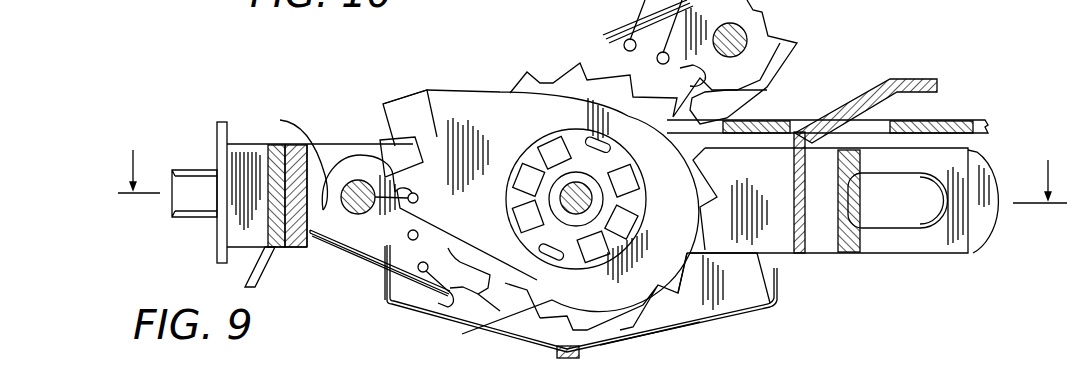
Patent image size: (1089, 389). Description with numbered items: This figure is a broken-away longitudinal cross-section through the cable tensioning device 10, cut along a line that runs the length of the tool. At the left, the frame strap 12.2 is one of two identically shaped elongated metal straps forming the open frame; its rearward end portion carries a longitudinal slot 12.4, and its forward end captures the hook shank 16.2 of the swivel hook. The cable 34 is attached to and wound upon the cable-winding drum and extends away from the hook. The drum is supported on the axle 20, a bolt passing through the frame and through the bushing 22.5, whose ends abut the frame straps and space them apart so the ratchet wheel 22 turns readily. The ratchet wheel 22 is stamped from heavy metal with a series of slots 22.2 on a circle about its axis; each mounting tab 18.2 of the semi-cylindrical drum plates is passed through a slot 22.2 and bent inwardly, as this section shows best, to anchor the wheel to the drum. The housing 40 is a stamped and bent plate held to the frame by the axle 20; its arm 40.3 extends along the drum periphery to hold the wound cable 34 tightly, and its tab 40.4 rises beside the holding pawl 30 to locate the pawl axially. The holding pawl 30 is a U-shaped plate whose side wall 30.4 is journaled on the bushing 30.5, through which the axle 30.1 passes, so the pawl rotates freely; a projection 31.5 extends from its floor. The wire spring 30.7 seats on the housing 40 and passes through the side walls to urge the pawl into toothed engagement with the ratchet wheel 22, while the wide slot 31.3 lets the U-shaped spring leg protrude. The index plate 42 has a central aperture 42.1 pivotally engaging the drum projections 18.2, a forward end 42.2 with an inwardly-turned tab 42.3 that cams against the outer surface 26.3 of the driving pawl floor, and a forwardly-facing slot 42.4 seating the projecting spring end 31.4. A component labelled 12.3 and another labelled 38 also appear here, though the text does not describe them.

The cable tensioning device 10 is at (587, 157).
The frame strap 12.2 is at (817, 247).
The housing end cap 12.3 is at (997, 212).
The longitudinal slot 12.4 is at (905, 223).
The hook shank 16.2 is at (197, 193).
The mounting tab 18.2 is at (605, 248).
The axle 20 is at (574, 192).
The ratchet wheel 22 is at (556, 80).
The slot 22.2 is at (553, 257).
The bushing 22.5 is at (584, 172).
The outer surface of driving pawl floor 26.3 is at (612, 33).
The holding pawl 30 is at (370, 260).
The axle 30.1 is at (345, 190).
The side wall 30.4 is at (360, 223).
The bushing 30.5 is at (335, 205).
The spring 30.7 is at (432, 307).
The slot 31.3 is at (763, 88).
The outwardly projecting end of spring leg 31.4 is at (432, 180).
The projection 31.5 is at (250, 278).
The cable 34 is at (839, 117).
The bracket 38 is at (877, 80).
The housing 40 is at (743, 322).
The arm 40.3 is at (663, 312).
The tab 40.4 is at (384, 288).
The index plate 42 is at (466, 118).
The central aperture 42.1 is at (500, 207).
The forward end 42.2 is at (403, 110).
The inwardly-turned tab 42.3 is at (388, 122).
The forwardly-facing slot 42.4 is at (390, 153).